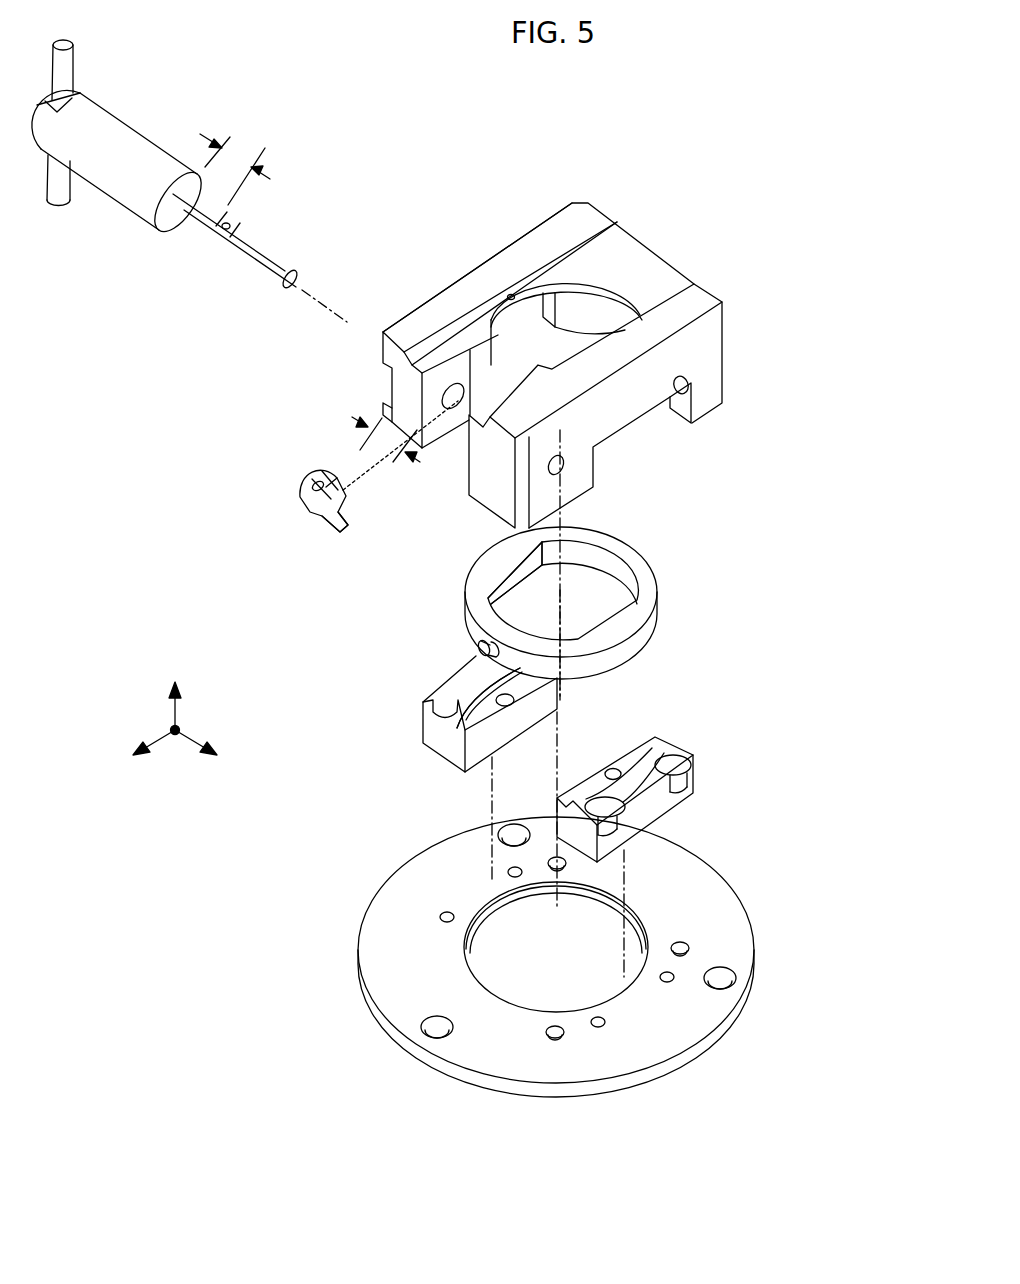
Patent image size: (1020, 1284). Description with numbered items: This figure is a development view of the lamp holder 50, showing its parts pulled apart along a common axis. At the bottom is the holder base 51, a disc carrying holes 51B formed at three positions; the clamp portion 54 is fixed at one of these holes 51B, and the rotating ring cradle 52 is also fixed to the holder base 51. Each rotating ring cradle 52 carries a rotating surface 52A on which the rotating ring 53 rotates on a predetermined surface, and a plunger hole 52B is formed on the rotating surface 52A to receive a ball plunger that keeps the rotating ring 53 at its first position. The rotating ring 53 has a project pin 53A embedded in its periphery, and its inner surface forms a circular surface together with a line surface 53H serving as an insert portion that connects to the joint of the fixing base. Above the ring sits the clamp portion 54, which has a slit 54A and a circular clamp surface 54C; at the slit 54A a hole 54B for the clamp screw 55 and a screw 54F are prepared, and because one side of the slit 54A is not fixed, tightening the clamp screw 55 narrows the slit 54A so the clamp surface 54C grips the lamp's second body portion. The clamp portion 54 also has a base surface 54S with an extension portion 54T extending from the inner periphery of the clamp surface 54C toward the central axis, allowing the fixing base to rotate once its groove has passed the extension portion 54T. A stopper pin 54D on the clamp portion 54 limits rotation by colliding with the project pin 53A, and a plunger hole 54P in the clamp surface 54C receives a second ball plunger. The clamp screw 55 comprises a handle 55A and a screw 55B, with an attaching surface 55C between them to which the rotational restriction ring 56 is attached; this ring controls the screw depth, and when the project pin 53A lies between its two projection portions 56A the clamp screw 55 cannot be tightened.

The lamp holder 50 is at (80, 453).
The holder base 51 is at (737, 945).
The holes 51B is at (555, 860).
The rotating ring cradle 52 is at (423, 739).
The rotating surface 52A is at (464, 728).
The plunger hole 52B is at (613, 769).
The rotating ring 53 is at (658, 614).
The project pin 53A is at (482, 650).
The line surface 53H is at (522, 568).
The clamp portion 54 is at (708, 340).
The slit 54A is at (455, 455).
The hole 54B is at (390, 396).
The circular clamp surface 54C is at (597, 290).
The stopper pin 54D is at (690, 384).
The screw 54F is at (565, 463).
The plunger hole 54P is at (510, 294).
The base surface 54S is at (483, 295).
The extension portion 54T is at (608, 226).
The clamp screw 55 is at (153, 216).
The handle 55A is at (100, 178).
The screw 55B is at (263, 283).
The attaching surface 55C is at (232, 222).
The rotational restriction ring 56 is at (300, 497).
The projection portions 56A is at (347, 525).